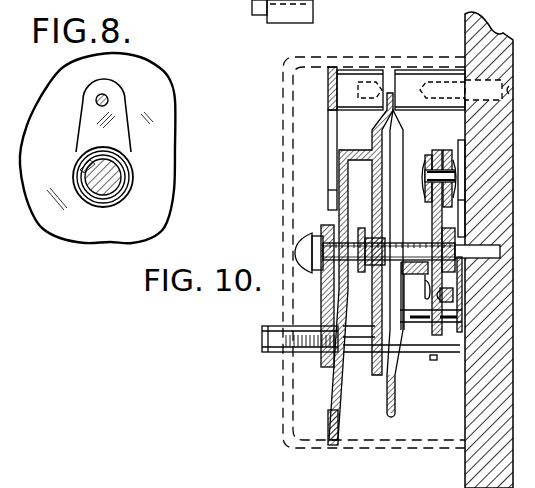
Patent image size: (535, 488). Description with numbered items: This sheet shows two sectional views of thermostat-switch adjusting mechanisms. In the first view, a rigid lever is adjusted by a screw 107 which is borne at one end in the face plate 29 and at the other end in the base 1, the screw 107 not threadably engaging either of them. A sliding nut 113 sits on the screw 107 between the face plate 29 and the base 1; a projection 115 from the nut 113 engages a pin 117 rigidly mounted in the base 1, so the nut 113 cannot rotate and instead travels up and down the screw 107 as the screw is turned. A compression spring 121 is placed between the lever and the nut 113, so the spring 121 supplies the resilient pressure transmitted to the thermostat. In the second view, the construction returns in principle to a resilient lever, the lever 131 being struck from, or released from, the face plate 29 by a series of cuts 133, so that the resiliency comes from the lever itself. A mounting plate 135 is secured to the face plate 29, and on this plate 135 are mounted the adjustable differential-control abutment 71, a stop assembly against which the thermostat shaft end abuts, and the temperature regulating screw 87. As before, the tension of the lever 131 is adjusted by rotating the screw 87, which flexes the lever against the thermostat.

In FIG. 8, the base 1 is at (163, 105).
In FIG. 8, the screw 107 is at (97, 195).
In FIG. 8, the sliding nut 113 is at (133, 175).
In FIG. 8, the projection 115 is at (82, 130).
In FIG. 8, the pin 117 is at (108, 100).
In FIG. 8, the compression spring 121 is at (80, 173).
In FIG. 10, the face-plate 29 is at (334, 68).
In FIG. 10, the stop assembly 71 is at (295, 238).
In FIG. 10, the screw 87 is at (266, 331).
In FIG. 10, the lever 131 is at (340, 210).
In FIG. 10, the cuts 133 is at (337, 203).
In FIG. 10, the mounting plate 135 is at (321, 305).